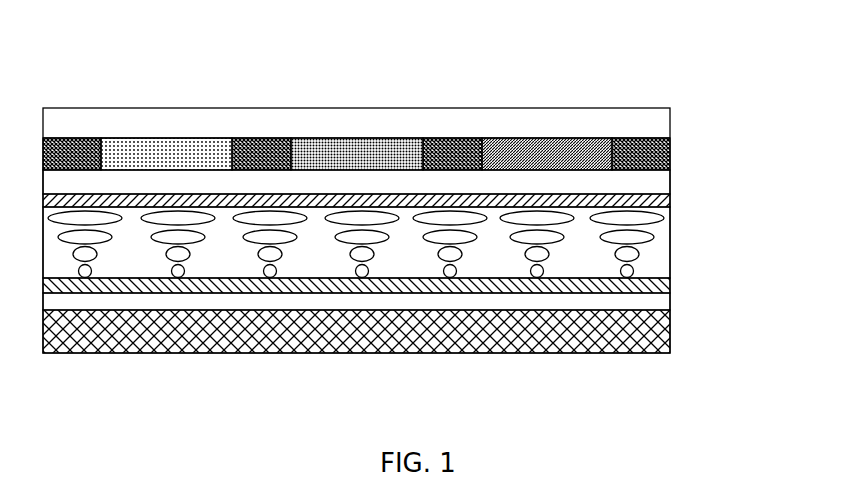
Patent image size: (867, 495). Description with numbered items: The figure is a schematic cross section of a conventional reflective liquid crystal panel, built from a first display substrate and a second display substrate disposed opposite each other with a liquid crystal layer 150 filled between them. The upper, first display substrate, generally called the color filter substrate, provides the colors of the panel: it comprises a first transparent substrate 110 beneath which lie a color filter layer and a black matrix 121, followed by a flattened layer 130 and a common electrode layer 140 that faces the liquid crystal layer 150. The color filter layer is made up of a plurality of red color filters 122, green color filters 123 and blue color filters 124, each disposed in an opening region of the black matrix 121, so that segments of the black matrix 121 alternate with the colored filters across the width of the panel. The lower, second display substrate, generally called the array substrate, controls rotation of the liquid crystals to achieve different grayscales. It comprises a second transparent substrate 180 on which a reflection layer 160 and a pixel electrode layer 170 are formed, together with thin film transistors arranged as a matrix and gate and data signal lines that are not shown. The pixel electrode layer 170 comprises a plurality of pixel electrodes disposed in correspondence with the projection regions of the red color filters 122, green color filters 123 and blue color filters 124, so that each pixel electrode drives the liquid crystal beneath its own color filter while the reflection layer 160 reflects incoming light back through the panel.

The first transparent substrate 110 is at (672, 118).
The black matrix 121 is at (56, 138).
The red color filter 122 is at (148, 148).
The green color filter 123 is at (352, 138).
The blue color filter 124 is at (558, 138).
The flattened layer 130 is at (672, 181).
The common electrode layer 140 is at (672, 205).
The liquid crystal layer 150 is at (672, 250).
The reflection layer 160 is at (672, 290).
The pixel electrode layer 170 is at (672, 308).
The second transparent substrate 180 is at (672, 343).